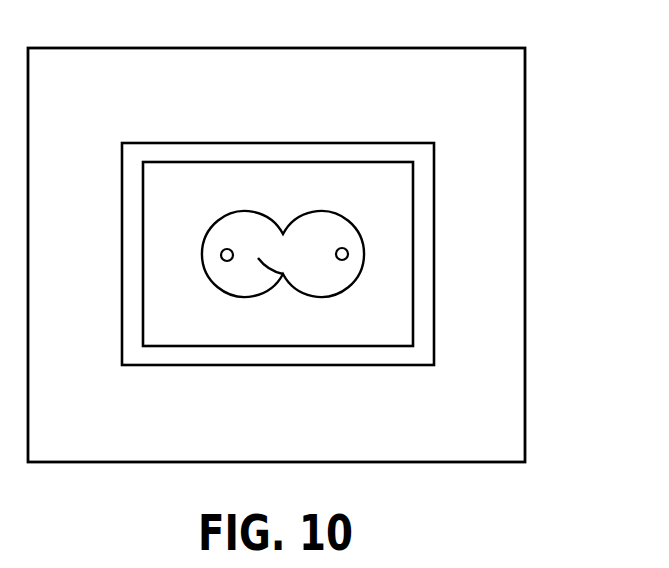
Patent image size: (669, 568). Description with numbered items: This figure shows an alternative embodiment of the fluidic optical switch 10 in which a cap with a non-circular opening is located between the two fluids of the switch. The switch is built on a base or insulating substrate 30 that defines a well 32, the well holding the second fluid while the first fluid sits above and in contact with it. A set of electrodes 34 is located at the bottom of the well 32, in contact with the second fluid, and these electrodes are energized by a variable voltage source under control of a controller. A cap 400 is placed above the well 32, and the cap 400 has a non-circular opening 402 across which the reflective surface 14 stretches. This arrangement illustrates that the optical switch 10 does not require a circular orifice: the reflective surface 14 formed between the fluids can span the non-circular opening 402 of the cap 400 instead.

The fluidic optical switch 10 is at (568, 107).
The reflective surface 14 is at (317, 227).
The insulating substrate 30 is at (525, 243).
The well 32 is at (237, 283).
The electrodes 34 is at (222, 250).
The cap 400 is at (398, 325).
The non-circular opening 402 is at (328, 280).